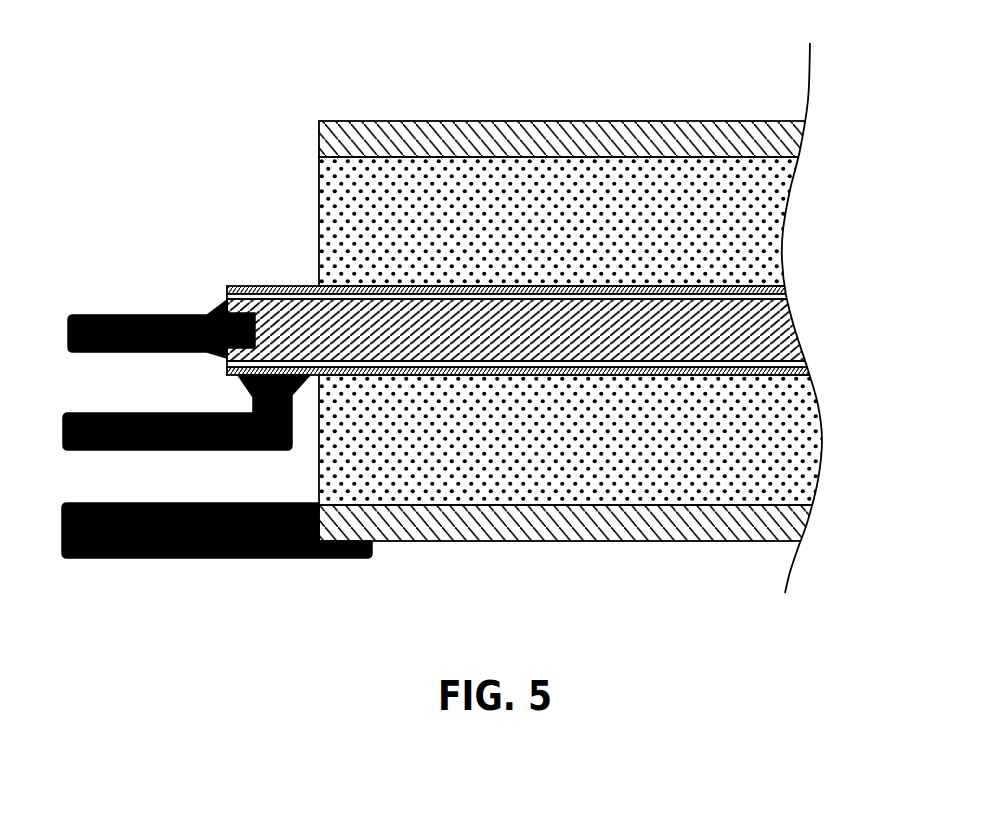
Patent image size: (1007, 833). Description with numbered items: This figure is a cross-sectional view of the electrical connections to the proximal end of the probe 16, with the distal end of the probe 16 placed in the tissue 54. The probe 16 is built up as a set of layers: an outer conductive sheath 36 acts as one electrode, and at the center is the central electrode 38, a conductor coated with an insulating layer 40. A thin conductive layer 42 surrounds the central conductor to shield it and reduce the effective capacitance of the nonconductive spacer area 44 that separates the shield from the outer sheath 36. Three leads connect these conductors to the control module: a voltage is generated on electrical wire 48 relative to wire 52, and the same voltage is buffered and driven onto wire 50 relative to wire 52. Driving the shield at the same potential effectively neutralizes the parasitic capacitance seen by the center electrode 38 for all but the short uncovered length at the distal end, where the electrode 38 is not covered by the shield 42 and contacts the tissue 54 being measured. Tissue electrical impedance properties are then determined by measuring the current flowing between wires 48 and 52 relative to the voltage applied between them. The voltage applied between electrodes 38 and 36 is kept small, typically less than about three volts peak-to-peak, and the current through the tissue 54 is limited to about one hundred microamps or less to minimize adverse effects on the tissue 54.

The probe 16 is at (494, 310).
The outer conductive sheath 36 is at (718, 132).
The central electrode 38 is at (800, 330).
The insulating layer 40 is at (787, 297).
The conductive layer 42 is at (785, 278).
The spacer area 44 is at (745, 234).
The electrical wire 48 is at (90, 313).
The wire 50 is at (90, 413).
The wire 52 is at (108, 558).
The tissue 54 is at (931, 162).